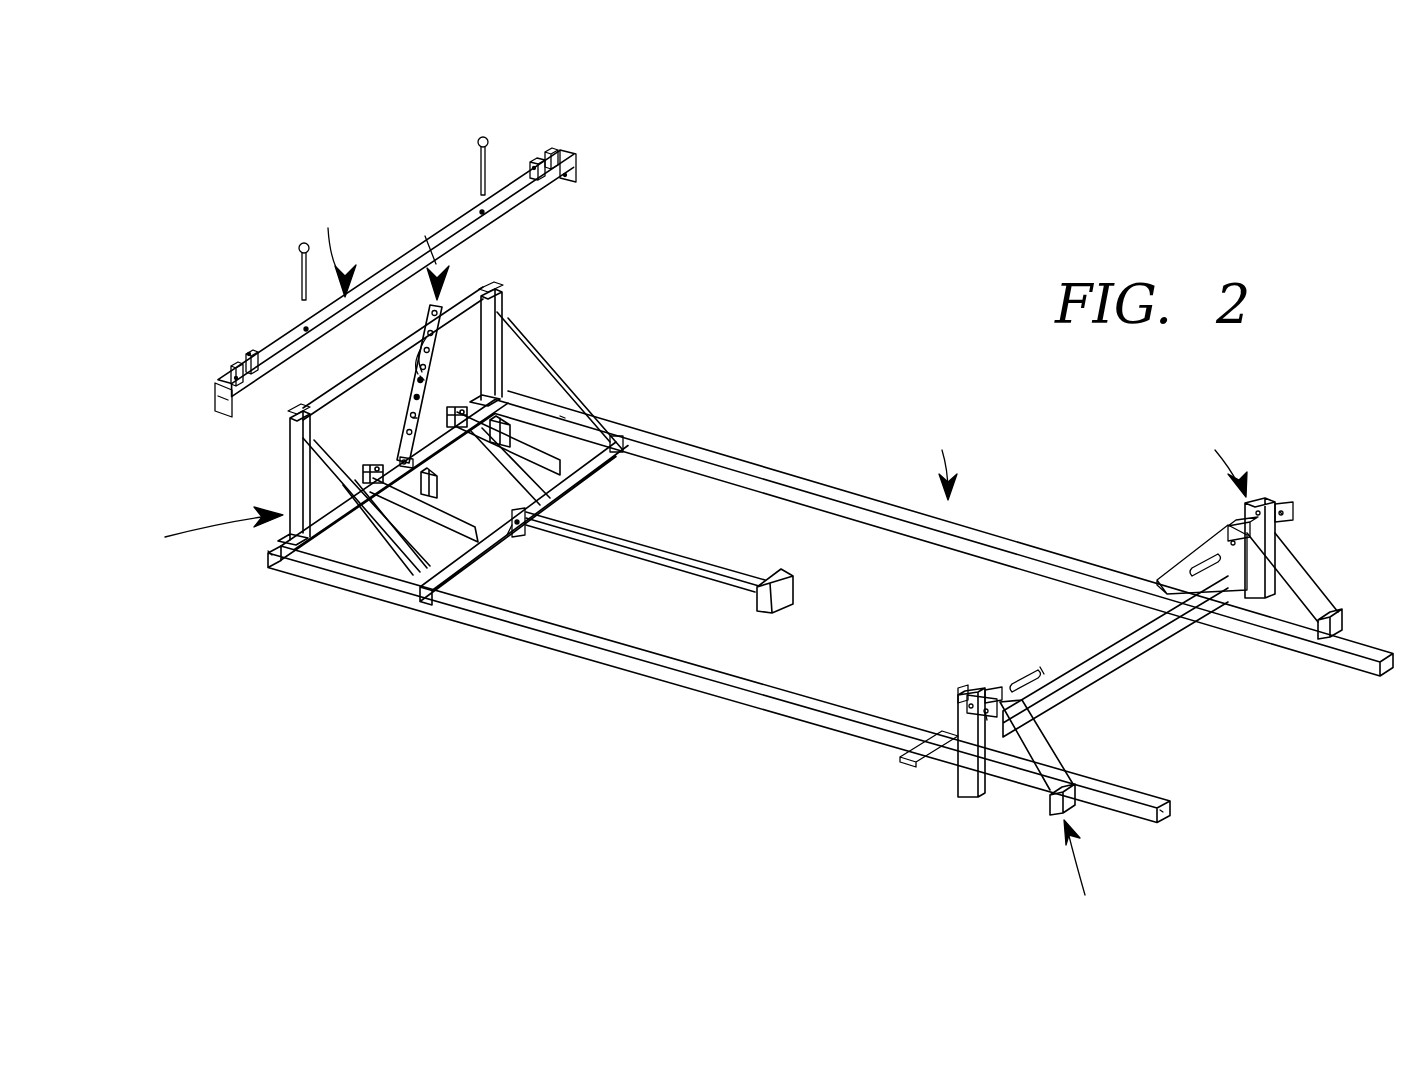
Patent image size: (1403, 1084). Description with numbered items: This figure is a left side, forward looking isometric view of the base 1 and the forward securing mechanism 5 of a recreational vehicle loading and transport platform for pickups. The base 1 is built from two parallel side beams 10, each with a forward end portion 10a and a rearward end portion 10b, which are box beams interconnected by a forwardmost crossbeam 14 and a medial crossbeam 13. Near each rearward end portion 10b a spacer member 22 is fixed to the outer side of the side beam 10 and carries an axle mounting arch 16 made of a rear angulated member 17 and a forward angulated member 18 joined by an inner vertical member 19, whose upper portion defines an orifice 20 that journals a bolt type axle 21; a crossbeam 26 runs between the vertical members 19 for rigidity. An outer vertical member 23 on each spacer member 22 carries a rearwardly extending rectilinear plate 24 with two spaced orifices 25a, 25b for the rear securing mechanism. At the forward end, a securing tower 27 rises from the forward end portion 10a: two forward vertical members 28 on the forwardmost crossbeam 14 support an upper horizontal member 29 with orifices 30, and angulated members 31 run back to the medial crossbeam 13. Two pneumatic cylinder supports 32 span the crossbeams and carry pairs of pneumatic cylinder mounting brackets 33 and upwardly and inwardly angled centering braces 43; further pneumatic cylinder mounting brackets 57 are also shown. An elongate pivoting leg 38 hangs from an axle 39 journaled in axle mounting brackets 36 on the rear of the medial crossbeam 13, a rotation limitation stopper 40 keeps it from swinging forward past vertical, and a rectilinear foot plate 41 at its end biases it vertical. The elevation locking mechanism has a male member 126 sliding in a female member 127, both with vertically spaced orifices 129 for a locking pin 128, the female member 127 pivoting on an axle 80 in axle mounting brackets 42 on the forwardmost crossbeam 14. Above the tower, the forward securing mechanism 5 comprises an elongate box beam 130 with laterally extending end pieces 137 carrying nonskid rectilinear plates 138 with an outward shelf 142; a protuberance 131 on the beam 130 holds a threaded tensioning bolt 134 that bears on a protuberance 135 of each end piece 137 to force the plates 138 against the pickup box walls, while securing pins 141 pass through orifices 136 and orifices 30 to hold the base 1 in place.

The base 1 is at (945, 460).
The forward securing mechanism 5 is at (334, 246).
The side beams 10 is at (830, 478).
The forward end portion 10a is at (556, 414).
The rearward end portion 10b is at (1370, 660).
The medial crossbeam 13 is at (600, 462).
The forwardmost crossbeam 14 is at (270, 543).
The axle mounting arch 16 is at (1155, 674).
The rear angulated member 17 is at (1300, 580).
The forward angulated member 18 is at (1165, 572).
The inner vertical member 19 is at (994, 692).
The orifice 20 is at (1230, 530).
The bolt type axle 21 is at (1032, 678).
The spacer member 22 is at (1332, 616).
The outer vertical member 23 is at (1250, 522).
The rectilinear plate 24 is at (1294, 512).
The orifice 25a is at (1258, 505).
The orifice 25b is at (1285, 506).
The crossbeam 26 is at (1132, 660).
The securing tower 27 is at (207, 532).
The forward vertical members 28 is at (497, 345).
The upper horizontal member 29 is at (370, 380).
The orifices 30 is at (488, 290).
The angulated members 31 is at (560, 382).
The pneumatic cylinder supports 32 is at (545, 492).
The pneumatic cylinder mounting brackets 33 is at (478, 428).
The axle mounting brackets 36 is at (540, 522).
The elongate pivoting leg 38 is at (668, 562).
The axle 39 is at (511, 532).
The rotation limitation stopper 40 is at (520, 525).
The rectilinear foot plate 41 is at (788, 598).
The axle mounting brackets 42 is at (402, 460).
The centering braces 43 is at (440, 478).
The pneumatic cylinder mounting brackets 57 is at (456, 405).
The axle 80 is at (500, 442).
The male member 126 is at (441, 304).
The female member 127 is at (412, 418).
The locking pin 128 is at (419, 382).
The orifices 129 is at (429, 320).
The elongate box beam 130 is at (393, 270).
The protuberance 131 is at (241, 354).
The threaded tensioning bolt 134 is at (252, 351).
The protuberance 135 is at (233, 364).
The orifices 136 is at (304, 327).
The laterally extending end pieces 137 is at (262, 425).
The rectilinear plates 138 is at (215, 397).
The securing pins 141 is at (298, 244).
The shelf 142 is at (216, 413).